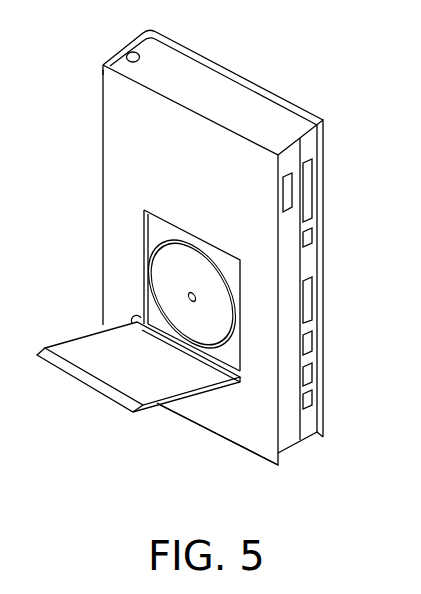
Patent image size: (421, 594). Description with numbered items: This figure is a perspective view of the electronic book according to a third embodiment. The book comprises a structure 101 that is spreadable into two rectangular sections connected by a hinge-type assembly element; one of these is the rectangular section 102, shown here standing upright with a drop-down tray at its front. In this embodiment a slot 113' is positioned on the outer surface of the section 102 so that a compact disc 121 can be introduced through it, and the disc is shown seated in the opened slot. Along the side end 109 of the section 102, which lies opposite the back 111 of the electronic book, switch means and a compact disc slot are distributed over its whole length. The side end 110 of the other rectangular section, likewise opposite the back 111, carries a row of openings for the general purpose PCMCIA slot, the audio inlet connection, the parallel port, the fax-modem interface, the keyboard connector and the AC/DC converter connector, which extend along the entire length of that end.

The structure 101 is at (102, 293).
The rectangular section 102 is at (238, 447).
The side end 109 is at (288, 433).
The side end 110 is at (303, 262).
The back 111 is at (102, 162).
The slot 113' is at (143, 290).
The compact disc 121 is at (220, 312).